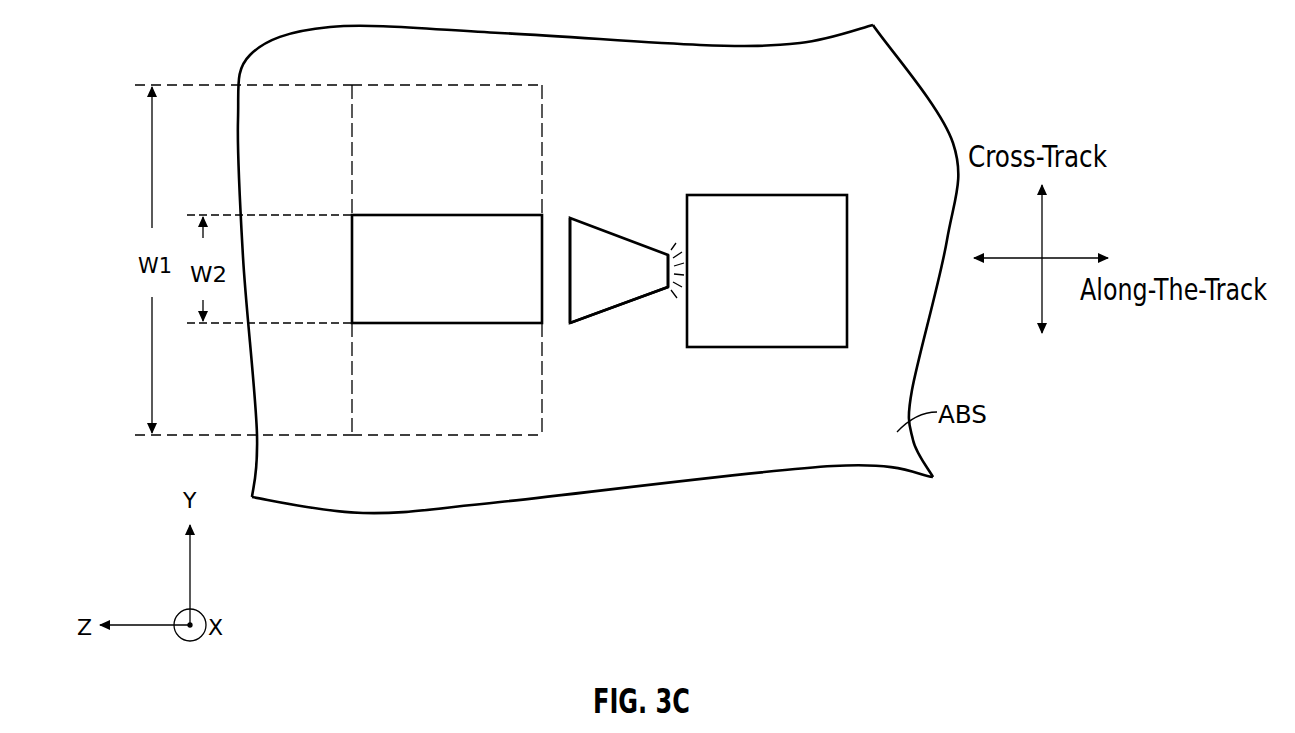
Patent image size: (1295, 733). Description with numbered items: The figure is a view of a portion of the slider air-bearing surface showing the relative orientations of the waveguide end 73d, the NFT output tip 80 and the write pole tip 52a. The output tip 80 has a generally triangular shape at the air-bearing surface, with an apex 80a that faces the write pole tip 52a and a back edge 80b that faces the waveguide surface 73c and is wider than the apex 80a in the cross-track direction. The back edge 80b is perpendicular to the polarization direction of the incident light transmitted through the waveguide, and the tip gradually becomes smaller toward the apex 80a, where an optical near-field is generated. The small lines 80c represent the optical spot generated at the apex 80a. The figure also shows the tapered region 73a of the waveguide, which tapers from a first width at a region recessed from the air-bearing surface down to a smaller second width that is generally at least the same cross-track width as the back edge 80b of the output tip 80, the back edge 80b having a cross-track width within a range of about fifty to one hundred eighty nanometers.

The tapered region 73a is at (356, 145).
The waveguide surface 73c is at (543, 232).
The waveguide end 73d is at (356, 251).
The NFT output tip 80 is at (572, 218).
The apex 80a is at (667, 288).
The back edge 80b is at (572, 255).
The small lines 80c is at (670, 245).
The write pole tip 52a is at (800, 200).